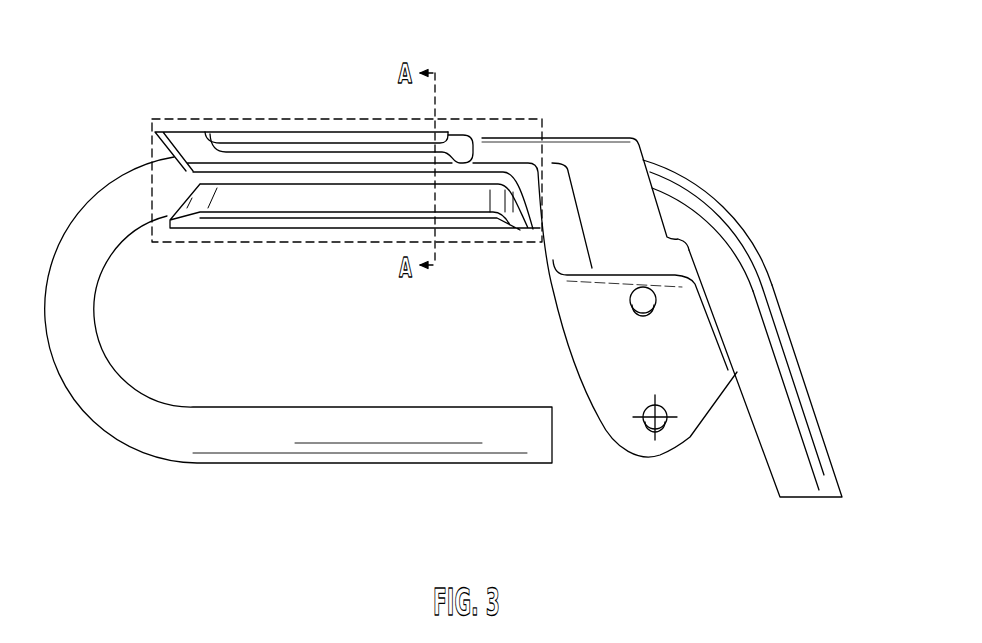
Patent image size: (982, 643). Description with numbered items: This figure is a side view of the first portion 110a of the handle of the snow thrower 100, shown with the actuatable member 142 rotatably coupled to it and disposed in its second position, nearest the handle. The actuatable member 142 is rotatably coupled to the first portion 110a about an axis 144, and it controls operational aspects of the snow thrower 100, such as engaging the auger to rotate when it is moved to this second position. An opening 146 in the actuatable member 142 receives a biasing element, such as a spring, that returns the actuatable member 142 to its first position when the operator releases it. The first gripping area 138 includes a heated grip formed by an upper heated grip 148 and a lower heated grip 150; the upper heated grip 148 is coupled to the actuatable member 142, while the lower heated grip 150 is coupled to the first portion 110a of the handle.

The snow thrower 100 is at (818, 463).
The first portion of the handle 110a is at (712, 192).
The first gripping area 138 is at (212, 121).
The actuatable member 142 is at (555, 142).
The axis 144 is at (657, 415).
The opening 146 is at (646, 297).
The upper heated grip 148 is at (388, 143).
The lower heated grip 150 is at (310, 213).